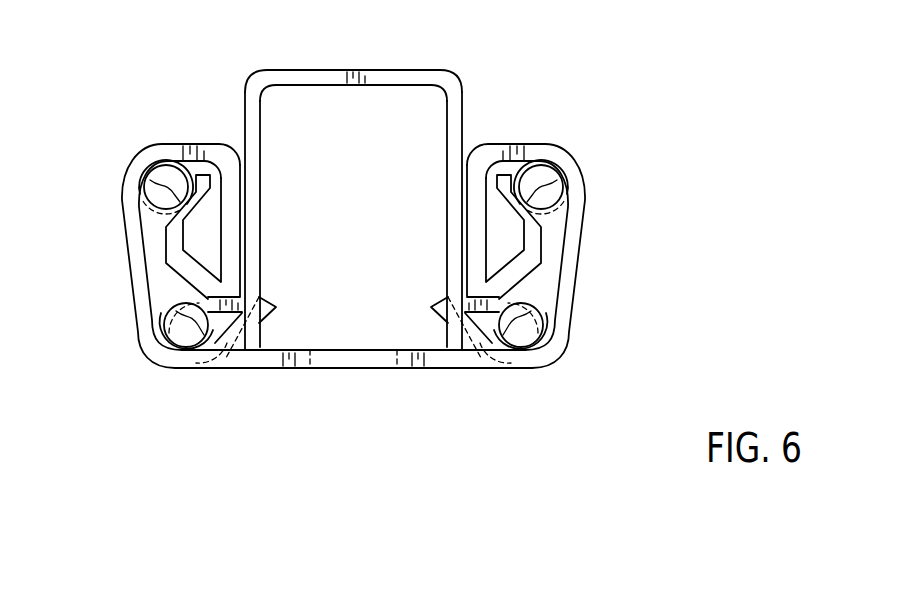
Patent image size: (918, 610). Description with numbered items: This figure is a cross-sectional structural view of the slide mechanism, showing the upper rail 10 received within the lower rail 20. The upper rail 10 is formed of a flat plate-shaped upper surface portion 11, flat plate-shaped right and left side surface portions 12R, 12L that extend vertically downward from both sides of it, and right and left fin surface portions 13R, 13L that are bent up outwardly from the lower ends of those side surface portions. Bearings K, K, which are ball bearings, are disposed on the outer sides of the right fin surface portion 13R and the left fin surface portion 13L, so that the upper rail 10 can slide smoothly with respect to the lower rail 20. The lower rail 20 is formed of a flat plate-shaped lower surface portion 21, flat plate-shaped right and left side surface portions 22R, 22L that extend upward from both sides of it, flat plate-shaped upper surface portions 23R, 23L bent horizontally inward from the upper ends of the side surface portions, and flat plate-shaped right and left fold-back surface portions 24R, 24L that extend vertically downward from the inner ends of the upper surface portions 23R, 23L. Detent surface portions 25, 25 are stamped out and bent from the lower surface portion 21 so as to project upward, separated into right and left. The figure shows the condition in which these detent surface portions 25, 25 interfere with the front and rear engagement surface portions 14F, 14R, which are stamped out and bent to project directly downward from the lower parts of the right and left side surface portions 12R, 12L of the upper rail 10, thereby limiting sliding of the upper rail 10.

The upper rail 10 is at (280, 76).
The upper surface portion 11 is at (326, 70).
The left side surface portion 12L is at (257, 175).
The right side surface portion 12R is at (450, 175).
The left fin surface portion 13L is at (176, 247).
The right fin surface portion 13R is at (531, 250).
The front engagement surface portion 14F is at (257, 352).
The rear engagement surface portion 14R is at (451, 352).
The lower rail 20 is at (167, 362).
The lower surface portion 21 is at (355, 362).
The left side surface portion 22L is at (127, 206).
The right side surface portion 22R is at (578, 208).
The left upper surface portion 23L is at (183, 145).
The right upper surface portion 23R is at (525, 145).
The left fold-back surface portion 24L is at (233, 233).
The right fold-back surface portion 24R is at (474, 233).
The detent surface portion 25 is at (277, 307).
The bearing K is at (167, 178).